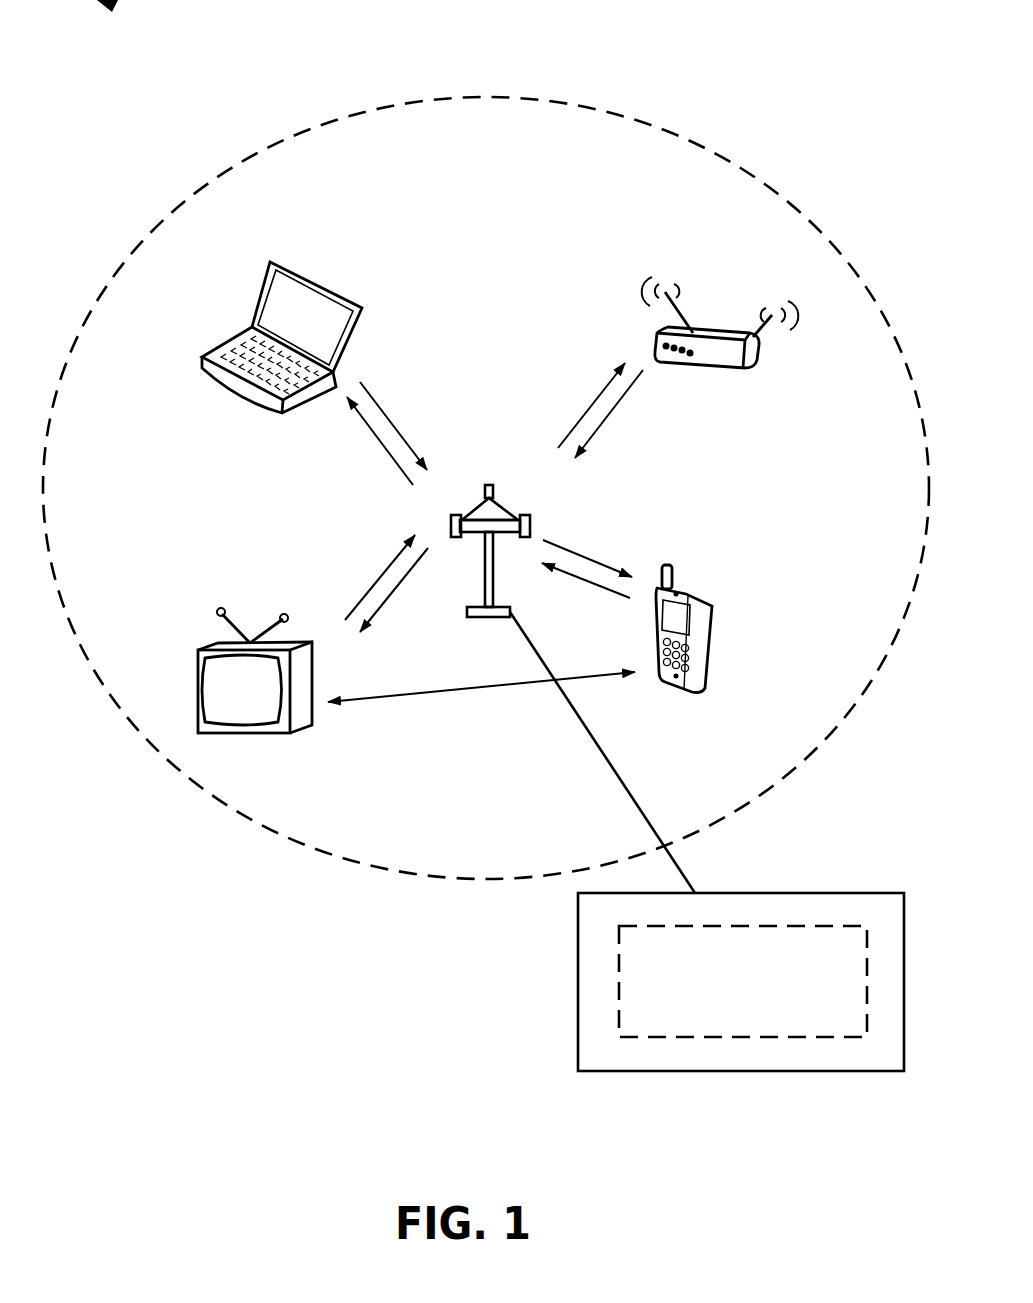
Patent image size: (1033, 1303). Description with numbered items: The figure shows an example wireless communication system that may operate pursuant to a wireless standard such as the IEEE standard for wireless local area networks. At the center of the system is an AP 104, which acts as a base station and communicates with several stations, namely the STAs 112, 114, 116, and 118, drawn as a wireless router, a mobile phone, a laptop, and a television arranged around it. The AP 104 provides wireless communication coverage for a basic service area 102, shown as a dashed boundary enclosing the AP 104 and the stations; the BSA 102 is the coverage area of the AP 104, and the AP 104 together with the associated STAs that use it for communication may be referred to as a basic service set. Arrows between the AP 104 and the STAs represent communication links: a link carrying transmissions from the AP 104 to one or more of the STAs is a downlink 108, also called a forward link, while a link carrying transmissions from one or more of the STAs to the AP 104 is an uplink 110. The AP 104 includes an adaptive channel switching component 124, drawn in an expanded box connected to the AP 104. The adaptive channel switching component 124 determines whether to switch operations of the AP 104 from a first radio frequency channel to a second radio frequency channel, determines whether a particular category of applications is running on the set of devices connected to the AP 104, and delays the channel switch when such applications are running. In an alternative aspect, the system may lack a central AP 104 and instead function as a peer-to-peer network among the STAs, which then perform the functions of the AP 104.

The basic service area 102 is at (493, 97).
The AP 104 is at (490, 483).
The downlink 108 is at (590, 557).
The uplink 110 is at (605, 592).
The STA 112 is at (698, 332).
The STA 114 is at (705, 600).
The STA 116 is at (285, 262).
The STA 118 is at (220, 647).
The adaptive channel switching component 124 is at (619, 997).